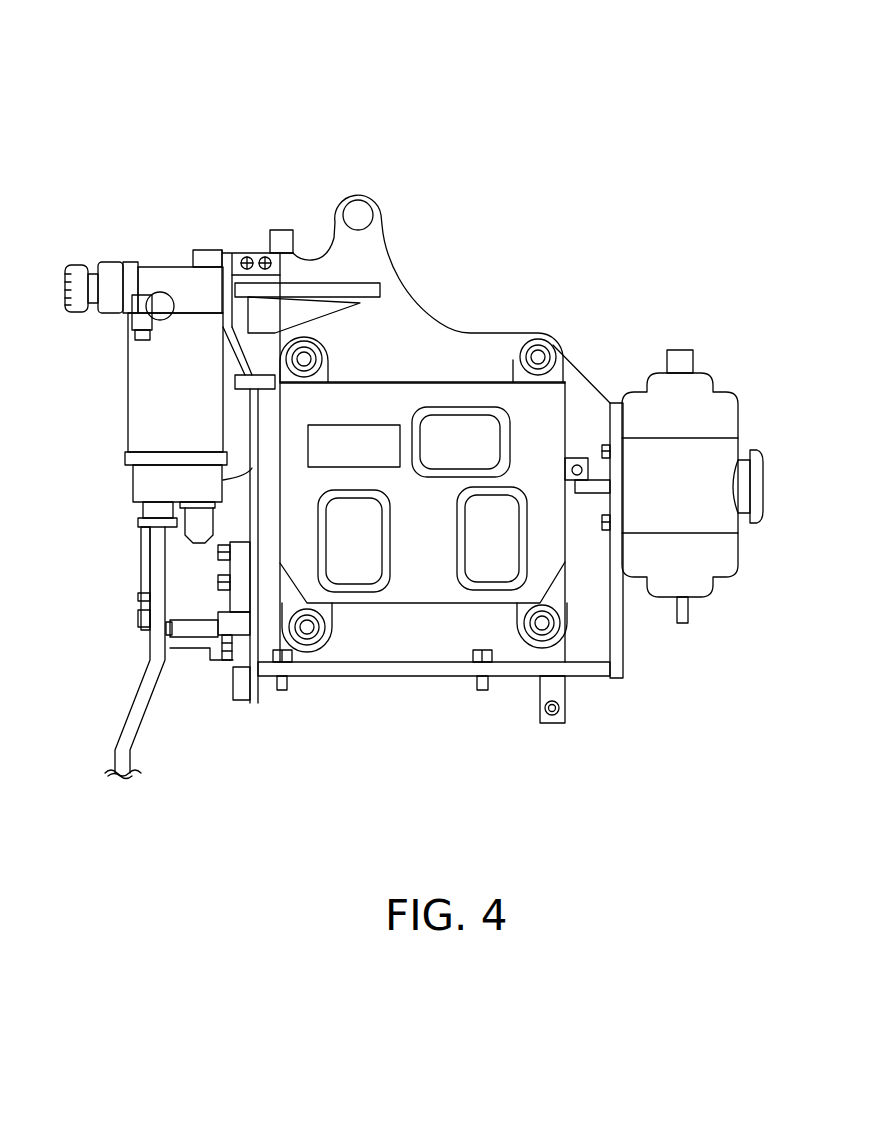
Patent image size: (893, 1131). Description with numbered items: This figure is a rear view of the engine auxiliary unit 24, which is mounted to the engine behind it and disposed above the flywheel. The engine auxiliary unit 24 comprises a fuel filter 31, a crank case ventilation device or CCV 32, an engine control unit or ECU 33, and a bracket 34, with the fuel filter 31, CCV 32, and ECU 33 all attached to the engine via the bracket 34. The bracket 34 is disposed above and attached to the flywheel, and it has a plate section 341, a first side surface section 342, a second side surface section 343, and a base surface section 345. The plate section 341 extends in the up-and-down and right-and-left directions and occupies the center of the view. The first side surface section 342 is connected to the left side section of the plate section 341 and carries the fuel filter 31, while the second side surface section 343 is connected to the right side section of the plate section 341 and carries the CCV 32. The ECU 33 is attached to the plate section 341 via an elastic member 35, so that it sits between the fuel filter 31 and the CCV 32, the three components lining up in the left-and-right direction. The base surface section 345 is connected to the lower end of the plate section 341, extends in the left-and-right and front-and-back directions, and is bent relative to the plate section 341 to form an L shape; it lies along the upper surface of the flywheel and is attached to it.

The engine auxiliary unit 24 is at (520, 130).
The fuel filter 31 is at (140, 384).
The crank case ventilation device 32 is at (723, 415).
The engine control unit 33 is at (485, 565).
The bracket 34 is at (453, 307).
The plate section 341 is at (402, 317).
The first side surface section 342 is at (253, 488).
The second side surface section 343 is at (623, 637).
The base surface section 345 is at (382, 667).
The elastic member 35 is at (305, 347).